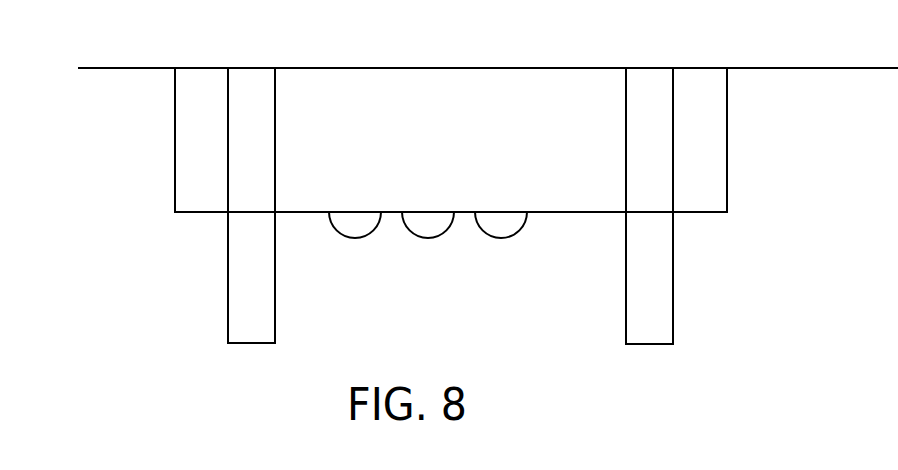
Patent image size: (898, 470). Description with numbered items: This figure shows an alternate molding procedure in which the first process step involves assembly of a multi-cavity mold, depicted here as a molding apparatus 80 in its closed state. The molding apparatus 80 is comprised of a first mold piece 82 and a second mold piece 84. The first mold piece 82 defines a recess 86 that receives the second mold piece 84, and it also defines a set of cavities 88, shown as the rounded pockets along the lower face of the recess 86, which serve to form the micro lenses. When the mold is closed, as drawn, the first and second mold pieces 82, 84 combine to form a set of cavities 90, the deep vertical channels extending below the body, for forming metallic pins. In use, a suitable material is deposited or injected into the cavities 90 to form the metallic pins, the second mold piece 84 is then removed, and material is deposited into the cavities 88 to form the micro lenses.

The molding apparatus 80 is at (118, 250).
The first mold piece 82 is at (850, 68).
The second mold piece 84 is at (387, 66).
The recess 86 is at (727, 147).
The cavities 88 is at (420, 237).
The cavities 90 is at (228, 263).